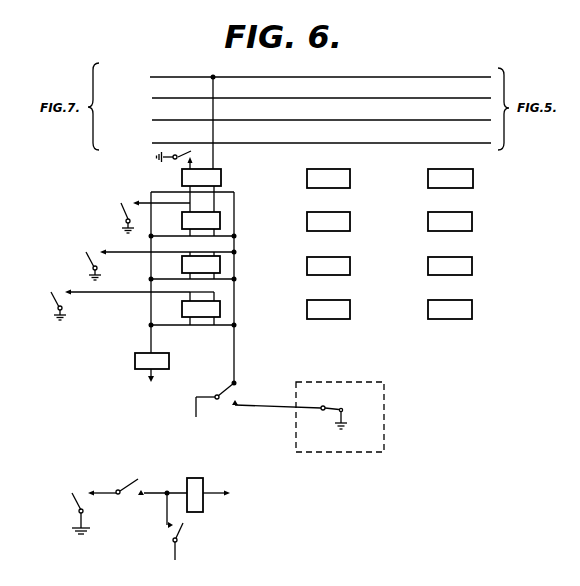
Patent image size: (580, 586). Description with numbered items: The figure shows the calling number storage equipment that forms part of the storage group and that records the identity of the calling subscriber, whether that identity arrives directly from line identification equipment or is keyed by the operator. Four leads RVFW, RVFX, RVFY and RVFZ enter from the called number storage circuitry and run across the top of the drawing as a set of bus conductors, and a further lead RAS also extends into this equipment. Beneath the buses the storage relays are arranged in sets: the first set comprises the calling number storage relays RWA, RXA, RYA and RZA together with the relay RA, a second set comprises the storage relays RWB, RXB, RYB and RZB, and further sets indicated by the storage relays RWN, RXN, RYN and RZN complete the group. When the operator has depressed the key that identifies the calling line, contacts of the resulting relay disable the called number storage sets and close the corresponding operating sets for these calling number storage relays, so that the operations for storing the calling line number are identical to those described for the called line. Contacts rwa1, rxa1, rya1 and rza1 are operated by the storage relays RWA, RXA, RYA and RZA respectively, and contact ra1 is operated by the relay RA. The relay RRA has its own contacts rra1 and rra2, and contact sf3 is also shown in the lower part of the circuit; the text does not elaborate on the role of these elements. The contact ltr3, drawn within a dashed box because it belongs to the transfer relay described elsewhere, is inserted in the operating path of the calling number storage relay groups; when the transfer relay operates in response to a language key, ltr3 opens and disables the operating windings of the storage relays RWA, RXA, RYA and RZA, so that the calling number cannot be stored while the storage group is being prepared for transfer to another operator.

The lead RVFW is at (295, 77).
The lead RVFX is at (296, 98).
The lead RVFY is at (296, 120).
The lead RVFZ is at (296, 143).
The calling number storage relay RWA is at (192, 134).
The calling number storage relay RXA is at (193, 215).
The calling number storage relay RYA is at (193, 266).
The calling number storage relay RZA is at (193, 310).
The relay RA is at (152, 367).
The calling number storage relay RWB is at (328, 178).
The calling number storage relay RWN is at (450, 178).
The calling number storage relay RXB is at (328, 221).
The calling number storage relay RXN is at (450, 221).
The calling number storage relay RYB is at (328, 266).
The calling number storage relay RYN is at (450, 266).
The calling number storage relay RZB is at (328, 309).
The calling number storage relay RZN is at (450, 309).
The contact of relay RWA rwa1 is at (163, 165).
The contact of relay RXA rxa1 is at (135, 217).
The contact of relay RYA rya1 is at (122, 265).
The contact of relay RZA rza1 is at (102, 305).
The contact of relay RRA rra2 is at (243, 393).
The lead RAS is at (194, 422).
The contact of relay LTR ltr3 is at (309, 417).
The contact of relay RA ra1 is at (86, 505).
The contact sf3 is at (135, 480).
The relay RRA is at (204, 495).
The contact of relay RRA rra1 is at (188, 526).